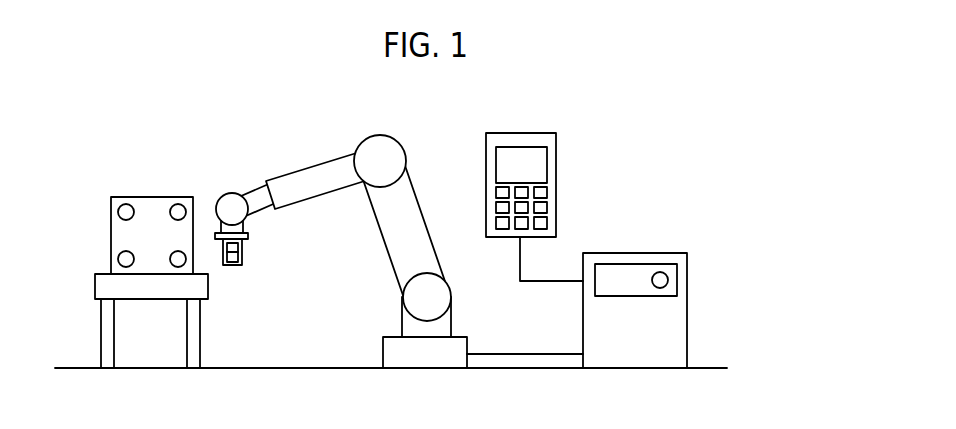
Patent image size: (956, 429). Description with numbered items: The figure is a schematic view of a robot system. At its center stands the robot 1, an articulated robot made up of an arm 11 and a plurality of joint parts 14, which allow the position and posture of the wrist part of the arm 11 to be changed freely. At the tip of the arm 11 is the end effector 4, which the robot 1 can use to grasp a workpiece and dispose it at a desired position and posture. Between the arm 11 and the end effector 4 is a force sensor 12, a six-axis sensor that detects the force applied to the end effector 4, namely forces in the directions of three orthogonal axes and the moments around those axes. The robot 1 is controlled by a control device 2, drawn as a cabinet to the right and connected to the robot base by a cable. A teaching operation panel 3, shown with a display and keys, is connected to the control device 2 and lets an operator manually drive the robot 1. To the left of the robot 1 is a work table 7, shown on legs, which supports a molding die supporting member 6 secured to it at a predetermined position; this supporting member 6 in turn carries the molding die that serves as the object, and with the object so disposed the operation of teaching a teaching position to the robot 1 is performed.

The robot 1 is at (341, 228).
The control device 2 is at (667, 335).
The teaching operation panel 3 is at (556, 162).
The end effector 4 is at (243, 260).
The molding die supporting member 6 is at (121, 239).
The work table 7 is at (105, 284).
The arm 11 is at (258, 198).
The force sensor 12 is at (250, 233).
The joint parts 14 is at (385, 148).